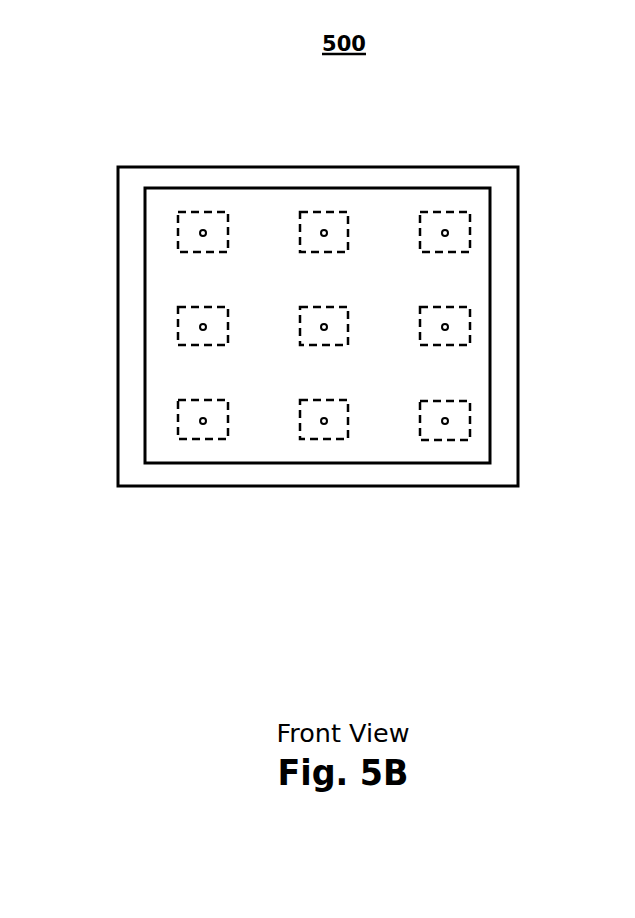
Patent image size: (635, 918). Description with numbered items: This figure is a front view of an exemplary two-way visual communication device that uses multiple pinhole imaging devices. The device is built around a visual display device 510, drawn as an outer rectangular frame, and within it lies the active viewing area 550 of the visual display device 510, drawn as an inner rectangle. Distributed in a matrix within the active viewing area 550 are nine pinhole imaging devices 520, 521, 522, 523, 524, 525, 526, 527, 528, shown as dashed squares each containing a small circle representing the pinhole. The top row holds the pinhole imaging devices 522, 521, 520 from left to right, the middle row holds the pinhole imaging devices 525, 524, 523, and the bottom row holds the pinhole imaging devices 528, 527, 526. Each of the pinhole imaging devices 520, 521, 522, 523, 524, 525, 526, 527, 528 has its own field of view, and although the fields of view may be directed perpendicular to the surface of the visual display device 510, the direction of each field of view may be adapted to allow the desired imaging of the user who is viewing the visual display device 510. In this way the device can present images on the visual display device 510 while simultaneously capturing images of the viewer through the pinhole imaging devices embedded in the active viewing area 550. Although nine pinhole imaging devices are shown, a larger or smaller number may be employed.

The visual display device 510 is at (518, 184).
The active viewing area 550 is at (456, 188).
The pinhole imaging device 520 is at (470, 233).
The pinhole imaging device 521 is at (300, 235).
The pinhole imaging device 522 is at (178, 233).
The pinhole imaging device 523 is at (470, 331).
The pinhole imaging device 524 is at (300, 334).
The pinhole imaging device 525 is at (178, 330).
The pinhole imaging device 526 is at (470, 424).
The pinhole imaging device 527 is at (300, 428).
The pinhole imaging device 528 is at (178, 424).